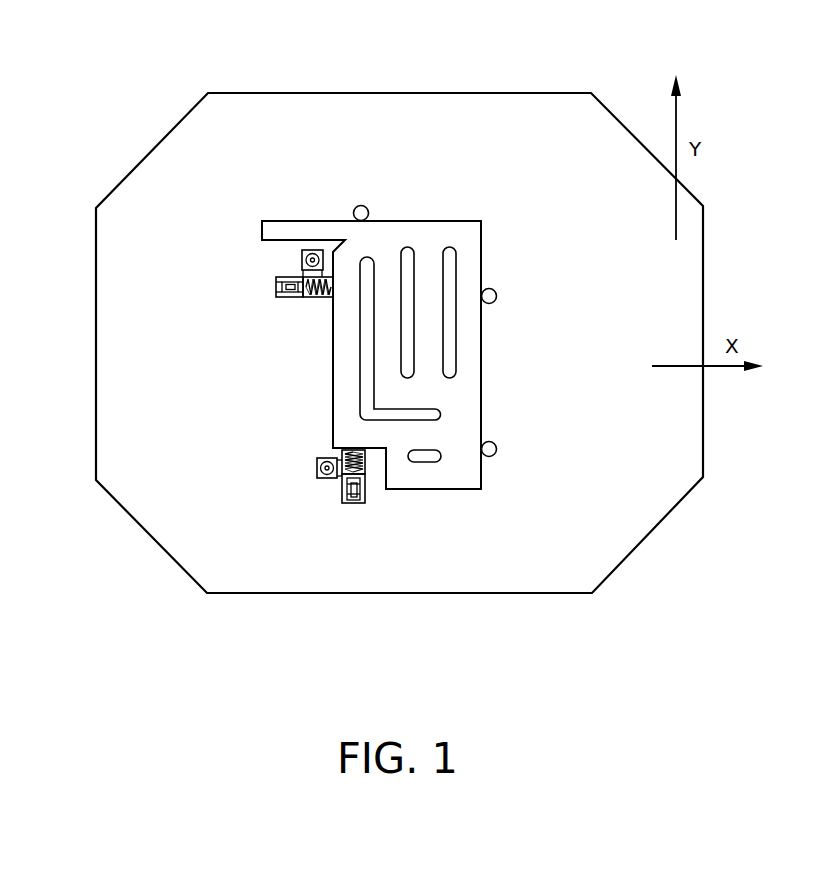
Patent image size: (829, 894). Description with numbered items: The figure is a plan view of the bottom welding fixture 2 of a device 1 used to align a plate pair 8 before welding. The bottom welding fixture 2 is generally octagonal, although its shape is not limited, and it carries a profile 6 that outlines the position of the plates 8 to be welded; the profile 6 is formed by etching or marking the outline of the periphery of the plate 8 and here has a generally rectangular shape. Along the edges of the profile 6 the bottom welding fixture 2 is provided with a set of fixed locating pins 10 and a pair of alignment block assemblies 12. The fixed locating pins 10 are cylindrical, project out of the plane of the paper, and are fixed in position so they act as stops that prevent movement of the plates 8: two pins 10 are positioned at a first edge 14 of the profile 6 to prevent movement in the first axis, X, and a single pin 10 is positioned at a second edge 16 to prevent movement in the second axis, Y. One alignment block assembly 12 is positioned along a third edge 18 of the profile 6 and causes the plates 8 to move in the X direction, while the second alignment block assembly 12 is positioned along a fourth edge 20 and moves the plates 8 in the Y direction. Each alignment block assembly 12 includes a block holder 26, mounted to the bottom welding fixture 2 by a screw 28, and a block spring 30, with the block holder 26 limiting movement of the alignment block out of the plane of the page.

The device 1 is at (88, 44).
The bottom welding fixture 2 is at (245, 593).
The profile 6 is at (466, 506).
The plate pair 8 is at (469, 472).
The fixed locating pins 10 is at (362, 206).
The alignment block assemblies 12 is at (342, 477).
The first edge 14 is at (481, 400).
The second edge 16 is at (289, 221).
The third edge 18 is at (333, 385).
The fourth edge 20 is at (397, 489).
The block holder 26 is at (277, 286).
The screw 28 is at (322, 468).
The block spring 30 is at (315, 298).